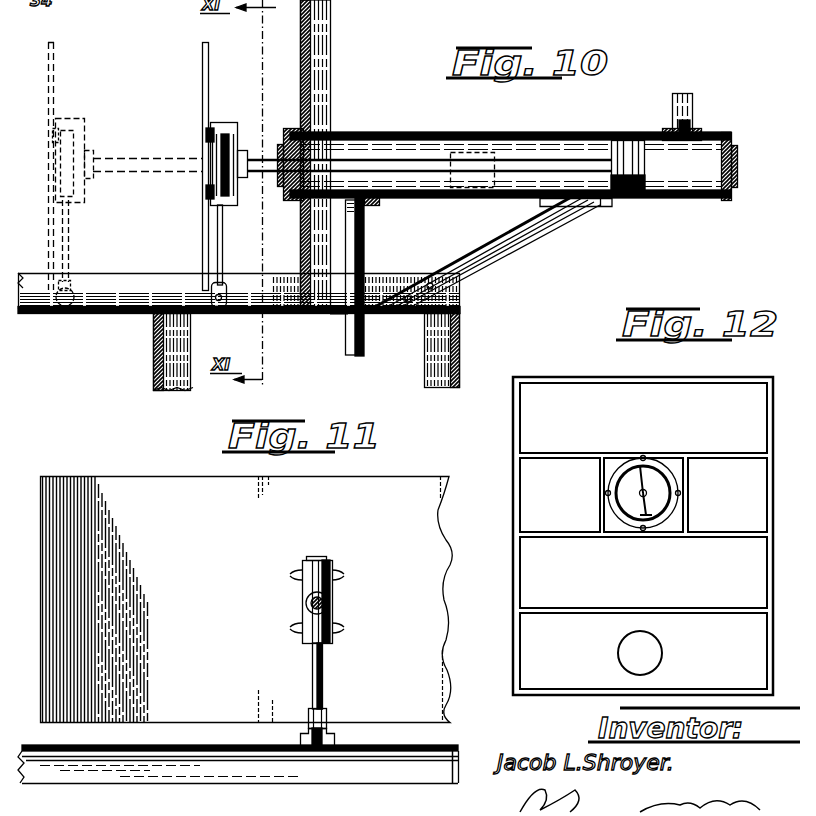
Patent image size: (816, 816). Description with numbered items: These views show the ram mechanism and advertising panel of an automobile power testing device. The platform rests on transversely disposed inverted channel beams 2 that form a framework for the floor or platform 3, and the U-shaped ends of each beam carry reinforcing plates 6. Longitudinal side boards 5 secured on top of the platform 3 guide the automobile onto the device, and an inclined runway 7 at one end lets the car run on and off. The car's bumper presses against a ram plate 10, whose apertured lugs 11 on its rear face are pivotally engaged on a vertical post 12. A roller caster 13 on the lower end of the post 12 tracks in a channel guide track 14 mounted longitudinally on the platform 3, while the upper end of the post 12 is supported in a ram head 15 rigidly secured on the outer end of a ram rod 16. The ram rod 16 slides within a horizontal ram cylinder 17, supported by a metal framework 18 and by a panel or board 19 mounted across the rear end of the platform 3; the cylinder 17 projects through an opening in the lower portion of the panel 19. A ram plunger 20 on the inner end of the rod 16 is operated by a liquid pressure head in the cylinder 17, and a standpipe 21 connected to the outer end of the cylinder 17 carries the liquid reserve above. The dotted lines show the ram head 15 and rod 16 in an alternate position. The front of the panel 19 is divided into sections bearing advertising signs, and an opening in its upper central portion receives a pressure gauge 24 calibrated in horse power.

In FIG. 10, the inverted channel beam 2 is at (163, 362).
In FIG. 10, the floor or platform 3 is at (338, 313).
In FIG. 11, the floor or platform 3 is at (118, 746).
In FIG. 10, the side board 5 is at (124, 290).
In FIG. 10, the reinforcing plate 6 is at (158, 385).
In FIG. 11, the inclined runway 7 is at (452, 783).
In FIG. 10, the ram plate 10 is at (203, 62).
In FIG. 11, the ram plate 10 is at (247, 599).
In FIG. 10, the apertured lug 11 is at (50, 130).
In FIG. 11, the apertured lug 11 is at (340, 625).
In FIG. 10, the vertical post 12 is at (66, 232).
In FIG. 11, the vertical post 12 is at (324, 682).
In FIG. 10, the roller caster 13 is at (72, 284).
In FIG. 11, the roller caster 13 is at (328, 722).
In FIG. 10, the channel guide track 14 is at (120, 305).
In FIG. 11, the channel guide track 14 is at (336, 740).
In FIG. 10, the ram head 15 is at (84, 130).
In FIG. 11, the ram head 15 is at (314, 570).
In FIG. 10, the ram rod 16 is at (136, 168).
In FIG. 11, the ram rod 16 is at (308, 603).
In FIG. 10, the ram cylinder 17 is at (530, 132).
In FIG. 10, the metal framework 18 is at (516, 243).
In FIG. 10, the panel or board 19 is at (310, 68).
In FIG. 12, the panel or board 19 is at (762, 632).
In FIG. 10, the ram plunger 20 is at (630, 150).
In FIG. 10, the standpipe 21 is at (690, 108).
In FIG. 12, the pressure gauge 24 is at (668, 515).